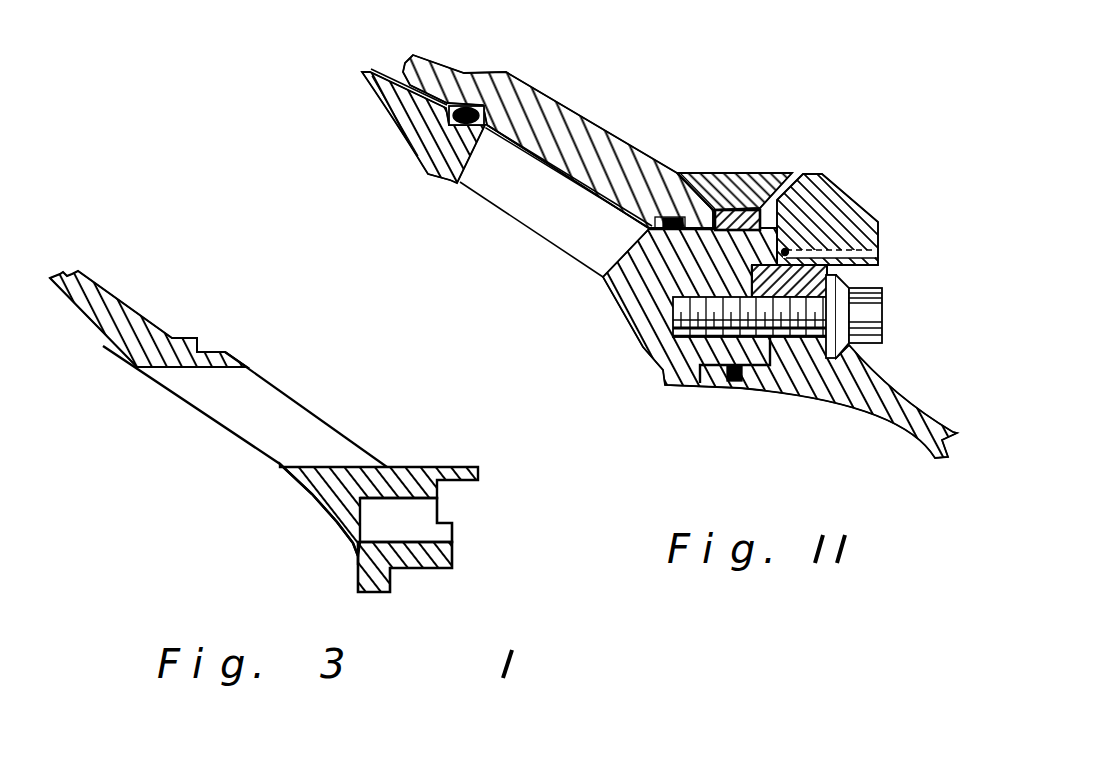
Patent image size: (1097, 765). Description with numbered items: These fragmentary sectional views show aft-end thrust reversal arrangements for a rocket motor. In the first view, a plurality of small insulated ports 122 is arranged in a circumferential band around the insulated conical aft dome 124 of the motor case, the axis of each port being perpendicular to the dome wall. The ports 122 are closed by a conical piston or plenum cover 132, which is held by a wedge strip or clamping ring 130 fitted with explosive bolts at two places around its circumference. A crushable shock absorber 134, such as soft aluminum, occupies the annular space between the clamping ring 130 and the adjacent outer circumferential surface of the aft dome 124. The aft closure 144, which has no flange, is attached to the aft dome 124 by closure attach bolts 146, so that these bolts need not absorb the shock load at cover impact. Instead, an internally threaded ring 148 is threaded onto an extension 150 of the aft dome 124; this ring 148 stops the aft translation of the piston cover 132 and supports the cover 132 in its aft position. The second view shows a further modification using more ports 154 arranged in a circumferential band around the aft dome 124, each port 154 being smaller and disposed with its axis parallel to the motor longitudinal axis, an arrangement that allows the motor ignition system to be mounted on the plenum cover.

In FIG. 11, the insulated ports 122 is at (473, 165).
In FIG. 11, the aft dome 124 is at (440, 147).
In FIG. 13, the aft dome 124 is at (150, 338).
In FIG. 11, the wedge strip or clamping ring 130 is at (758, 187).
In FIG. 11, the conical piston or plenum cover 132 is at (558, 122).
In FIG. 11, the crushable shock absorber 134 is at (762, 215).
In FIG. 11, the aft closure 144 is at (907, 402).
In FIG. 11, the closure attach bolts 146 is at (882, 310).
In FIG. 11, the internally threaded ring 148 is at (853, 225).
In FIG. 11, the extension of the aft dome 150 is at (873, 255).
In FIG. 13, the ports 154 is at (197, 370).